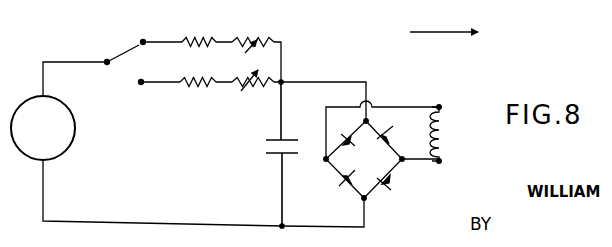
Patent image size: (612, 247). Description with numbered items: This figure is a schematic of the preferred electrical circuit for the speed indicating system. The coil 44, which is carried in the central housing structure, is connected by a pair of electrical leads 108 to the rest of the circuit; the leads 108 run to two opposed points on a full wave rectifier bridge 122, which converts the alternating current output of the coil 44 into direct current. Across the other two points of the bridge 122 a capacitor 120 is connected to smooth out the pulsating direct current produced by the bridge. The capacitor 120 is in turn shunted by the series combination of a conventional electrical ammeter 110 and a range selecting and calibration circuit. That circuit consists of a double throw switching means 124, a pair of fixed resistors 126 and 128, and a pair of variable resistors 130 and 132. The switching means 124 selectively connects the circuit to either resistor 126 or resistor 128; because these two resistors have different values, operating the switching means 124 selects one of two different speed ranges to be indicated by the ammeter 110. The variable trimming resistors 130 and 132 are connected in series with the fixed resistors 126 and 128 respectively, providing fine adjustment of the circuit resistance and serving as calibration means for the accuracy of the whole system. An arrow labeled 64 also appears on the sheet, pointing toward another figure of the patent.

The ammeter 110 is at (75, 133).
The double throw switching means 124 is at (118, 50).
The fixed resistor 126 is at (186, 38).
The fixed resistor 128 is at (186, 88).
The variable resistor 130 is at (260, 25).
The variable resistor 132 is at (238, 88).
The capacitor 120 is at (288, 139).
The full wave rectifier bridge 122 is at (383, 191).
The coil 44 is at (447, 127).
The electrical leads 108 is at (424, 106).
The reference arrow to FIG. 3 64 is at (417, 36).